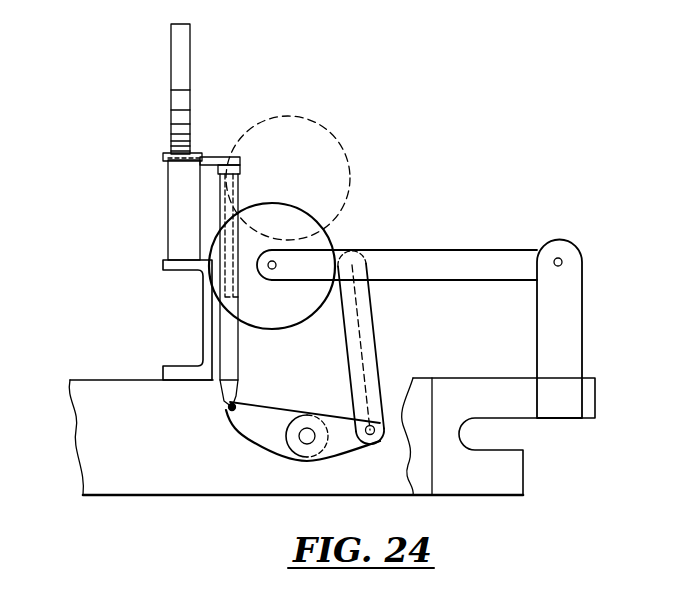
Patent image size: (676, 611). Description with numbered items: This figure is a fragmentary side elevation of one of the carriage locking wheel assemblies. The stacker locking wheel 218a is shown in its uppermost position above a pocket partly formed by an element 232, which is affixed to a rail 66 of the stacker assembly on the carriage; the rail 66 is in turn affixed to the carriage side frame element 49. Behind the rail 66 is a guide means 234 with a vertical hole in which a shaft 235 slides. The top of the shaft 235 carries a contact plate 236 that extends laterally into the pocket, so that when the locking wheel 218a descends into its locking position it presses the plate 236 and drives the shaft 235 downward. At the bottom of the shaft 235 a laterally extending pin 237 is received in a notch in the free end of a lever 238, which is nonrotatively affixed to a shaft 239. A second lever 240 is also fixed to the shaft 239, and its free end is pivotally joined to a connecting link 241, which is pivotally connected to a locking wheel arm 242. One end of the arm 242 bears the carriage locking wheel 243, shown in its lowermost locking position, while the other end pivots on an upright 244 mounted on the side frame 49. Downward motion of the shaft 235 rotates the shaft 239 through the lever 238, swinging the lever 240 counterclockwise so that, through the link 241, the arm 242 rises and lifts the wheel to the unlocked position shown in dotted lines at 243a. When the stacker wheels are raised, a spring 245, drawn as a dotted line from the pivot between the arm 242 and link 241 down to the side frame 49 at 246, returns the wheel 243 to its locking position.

The carriage side frame element 49 is at (152, 494).
The rail 66 is at (203, 322).
The locking wheel 218a is at (187, 36).
The pocket forming element 232 is at (168, 206).
The guide means 234 is at (245, 345).
The shaft 235 is at (237, 393).
The contact plate 236 is at (212, 157).
The pin 237 is at (226, 406).
The lever 238 is at (268, 430).
The shaft 239 is at (302, 442).
The second lever 240 is at (339, 443).
The connecting link 241 is at (372, 312).
The locking wheel arm 242 is at (462, 250).
The carriage locking wheel 243 is at (328, 238).
The carriage locking wheel in unlocked position 243a is at (318, 124).
The upright 244 is at (582, 293).
The spring 245 is at (376, 352).
The spring attachment point 246 is at (396, 494).